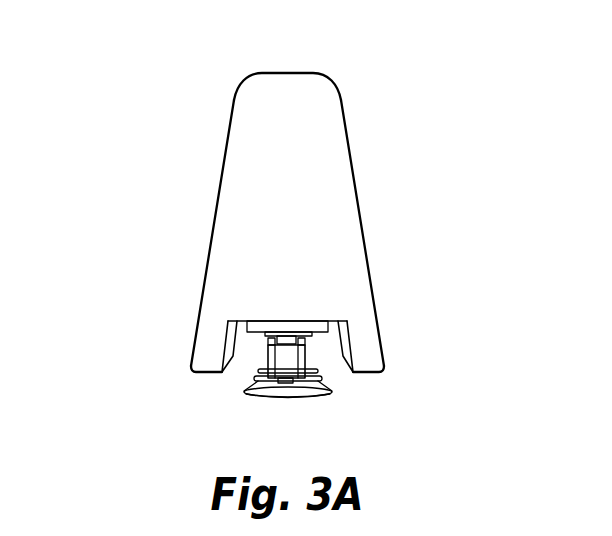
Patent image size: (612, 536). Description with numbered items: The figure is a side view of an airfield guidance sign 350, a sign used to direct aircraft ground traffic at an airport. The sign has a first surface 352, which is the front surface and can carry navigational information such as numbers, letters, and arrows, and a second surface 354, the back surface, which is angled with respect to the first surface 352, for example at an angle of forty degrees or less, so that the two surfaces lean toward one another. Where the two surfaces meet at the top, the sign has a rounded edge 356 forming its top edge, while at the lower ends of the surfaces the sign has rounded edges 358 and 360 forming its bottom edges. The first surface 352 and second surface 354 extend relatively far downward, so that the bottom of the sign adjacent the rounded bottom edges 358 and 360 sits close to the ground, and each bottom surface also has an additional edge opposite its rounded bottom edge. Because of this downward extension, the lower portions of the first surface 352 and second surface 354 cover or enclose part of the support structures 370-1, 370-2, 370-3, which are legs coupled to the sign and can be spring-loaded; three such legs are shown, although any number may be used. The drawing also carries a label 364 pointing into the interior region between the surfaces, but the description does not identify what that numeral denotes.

The airfield guidance sign 350 is at (158, 33).
The first surface 352 is at (352, 162).
The second surface 354 is at (224, 162).
The rounded edge 356 is at (289, 74).
The rounded edge 358 is at (385, 372).
The rounded edge 360 is at (191, 372).
The interior cavity 364 is at (283, 227).
The support structure 370-1 is at (286, 392).
The support structure 370-2 is at (256, 374).
The support structure 370-3 is at (316, 372).